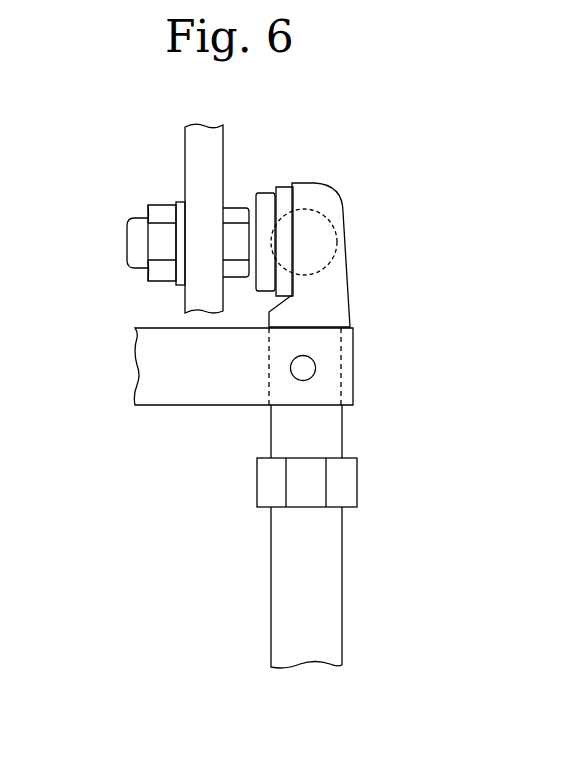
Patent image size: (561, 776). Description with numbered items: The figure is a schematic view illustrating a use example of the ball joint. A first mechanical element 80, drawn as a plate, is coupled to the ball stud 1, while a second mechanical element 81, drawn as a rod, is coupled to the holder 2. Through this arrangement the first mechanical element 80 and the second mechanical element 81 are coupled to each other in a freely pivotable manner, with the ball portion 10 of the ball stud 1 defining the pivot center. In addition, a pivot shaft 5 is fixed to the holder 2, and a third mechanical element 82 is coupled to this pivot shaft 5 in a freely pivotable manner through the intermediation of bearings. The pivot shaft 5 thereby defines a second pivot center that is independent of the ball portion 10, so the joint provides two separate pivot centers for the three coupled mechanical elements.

The ball stud 1 is at (117, 213).
The holder 2 is at (352, 291).
The pivot shaft 5 is at (315, 368).
The ball portion 10 is at (310, 205).
The first mechanical element 80 is at (212, 143).
The second mechanical element 81 is at (343, 575).
The third mechanical element 82 is at (189, 393).